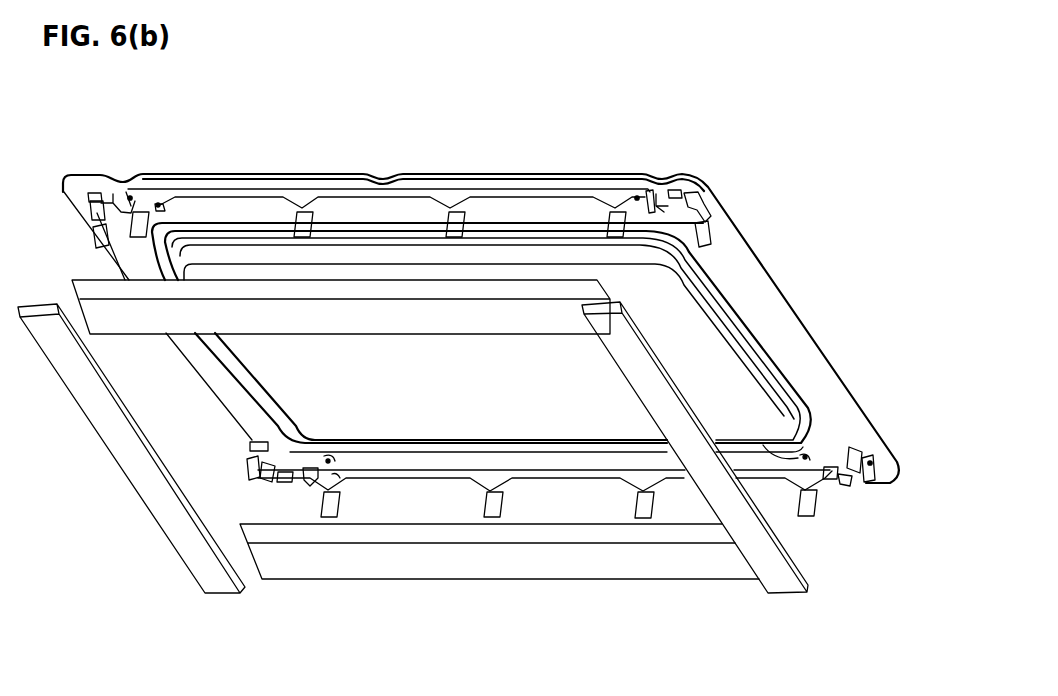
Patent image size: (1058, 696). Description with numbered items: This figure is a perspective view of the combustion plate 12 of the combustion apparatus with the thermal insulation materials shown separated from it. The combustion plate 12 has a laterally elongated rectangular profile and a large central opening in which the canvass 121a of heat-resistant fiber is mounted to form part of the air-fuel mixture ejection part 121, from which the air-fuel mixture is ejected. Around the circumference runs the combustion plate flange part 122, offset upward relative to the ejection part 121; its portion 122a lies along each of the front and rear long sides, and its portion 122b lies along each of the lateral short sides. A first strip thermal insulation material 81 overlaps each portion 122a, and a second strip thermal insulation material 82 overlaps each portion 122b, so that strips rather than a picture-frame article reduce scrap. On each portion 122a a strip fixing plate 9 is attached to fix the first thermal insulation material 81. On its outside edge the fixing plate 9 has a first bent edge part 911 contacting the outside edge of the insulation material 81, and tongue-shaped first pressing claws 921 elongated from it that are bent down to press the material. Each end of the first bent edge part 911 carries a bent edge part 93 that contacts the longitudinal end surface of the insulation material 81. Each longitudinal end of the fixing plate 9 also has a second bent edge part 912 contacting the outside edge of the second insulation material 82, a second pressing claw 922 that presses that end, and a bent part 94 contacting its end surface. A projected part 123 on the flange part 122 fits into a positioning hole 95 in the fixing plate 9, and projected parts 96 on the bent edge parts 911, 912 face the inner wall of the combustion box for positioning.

The combustion plate 12 is at (784, 290).
The combustion plate flange part 122 is at (430, 178).
The front and rear side portion of the combustion plate flange part 122a is at (550, 480).
The lateral side portion of the combustion plate flange part 122b is at (778, 320).
The air-fuel mixture ejection part 121 is at (457, 480).
The canvass 121a is at (773, 458).
The projected part 123 is at (158, 208).
The fixing plate 9 is at (380, 207).
The first bent edge part 911 is at (315, 193).
The second bent edge part 912 is at (706, 218).
The first pressing claw 921 is at (455, 214).
The second pressing claw 922 is at (711, 241).
The bent edge part 93 is at (110, 195).
The bent part 94 is at (96, 192).
The positioning hole 95 is at (162, 208).
The projected part for positioning 96 is at (131, 196).
The first strip thermal insulation material 81 is at (412, 323).
The second strip thermal insulation material 82 is at (645, 378).